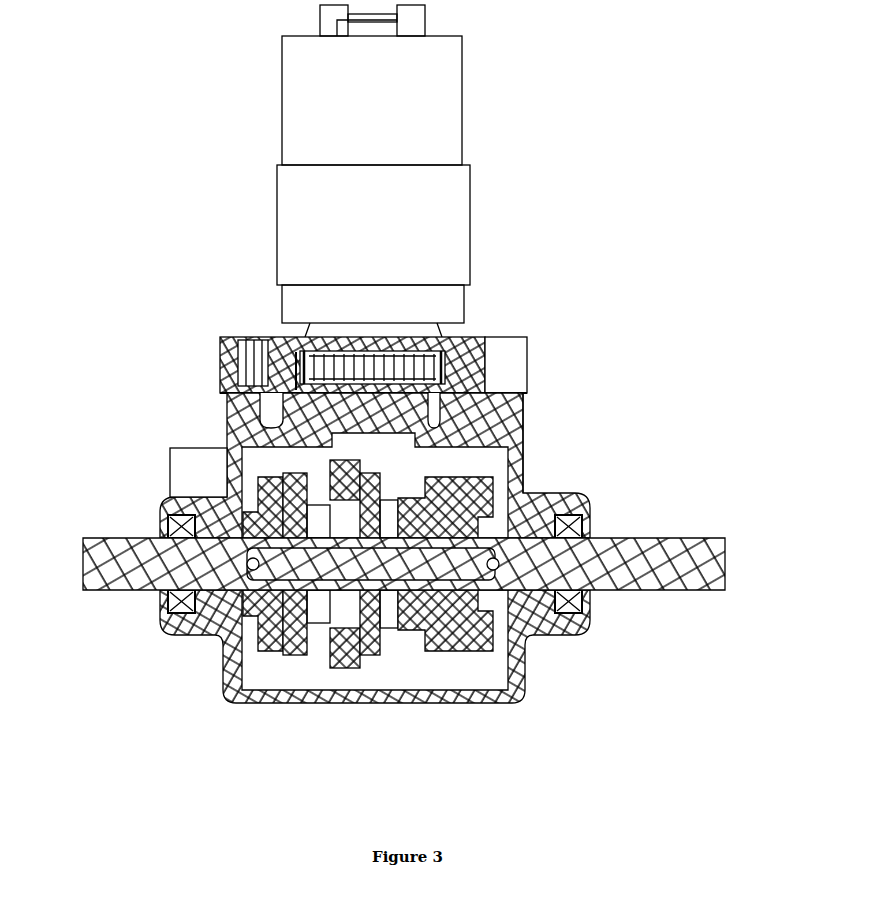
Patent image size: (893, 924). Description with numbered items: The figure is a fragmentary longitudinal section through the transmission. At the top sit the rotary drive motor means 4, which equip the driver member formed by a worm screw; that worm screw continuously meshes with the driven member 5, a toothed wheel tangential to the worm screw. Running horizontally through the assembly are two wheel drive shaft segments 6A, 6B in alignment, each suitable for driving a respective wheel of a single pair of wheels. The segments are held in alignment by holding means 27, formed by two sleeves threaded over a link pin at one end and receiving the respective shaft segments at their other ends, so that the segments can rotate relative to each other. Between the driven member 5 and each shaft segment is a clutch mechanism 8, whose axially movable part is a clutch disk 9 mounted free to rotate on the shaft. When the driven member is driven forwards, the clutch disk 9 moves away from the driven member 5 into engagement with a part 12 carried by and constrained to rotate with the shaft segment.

The rotary drive motor means 4 is at (470, 200).
The clutch disk 9 is at (455, 472).
The part carried by the wheel drive shaft segment 12 is at (500, 507).
The holding means 27 is at (342, 578).
The driven member 5 is at (413, 662).
The clutch mechanism 8 is at (487, 670).
The wheel drive shaft segment 6A is at (117, 590).
The wheel drive shaft segment 6B is at (688, 592).